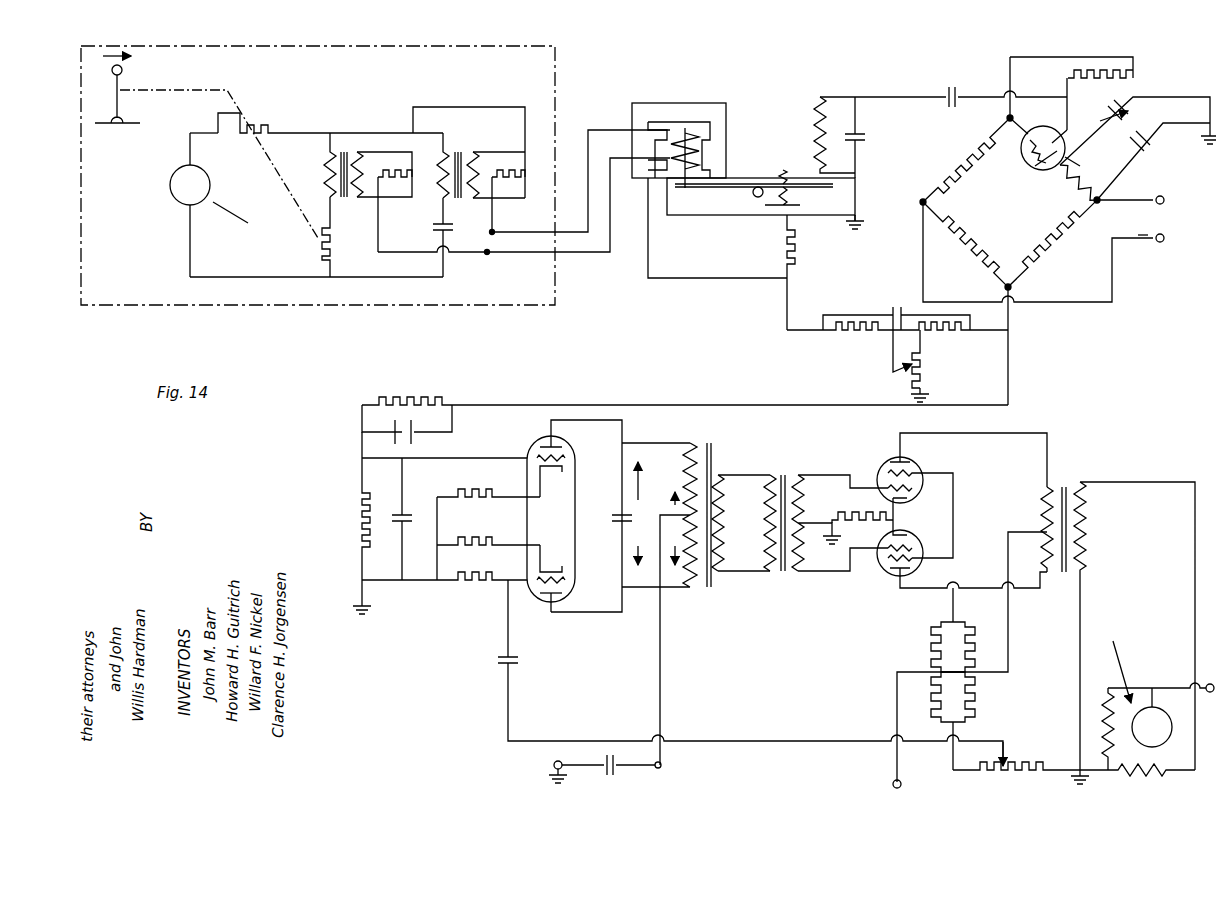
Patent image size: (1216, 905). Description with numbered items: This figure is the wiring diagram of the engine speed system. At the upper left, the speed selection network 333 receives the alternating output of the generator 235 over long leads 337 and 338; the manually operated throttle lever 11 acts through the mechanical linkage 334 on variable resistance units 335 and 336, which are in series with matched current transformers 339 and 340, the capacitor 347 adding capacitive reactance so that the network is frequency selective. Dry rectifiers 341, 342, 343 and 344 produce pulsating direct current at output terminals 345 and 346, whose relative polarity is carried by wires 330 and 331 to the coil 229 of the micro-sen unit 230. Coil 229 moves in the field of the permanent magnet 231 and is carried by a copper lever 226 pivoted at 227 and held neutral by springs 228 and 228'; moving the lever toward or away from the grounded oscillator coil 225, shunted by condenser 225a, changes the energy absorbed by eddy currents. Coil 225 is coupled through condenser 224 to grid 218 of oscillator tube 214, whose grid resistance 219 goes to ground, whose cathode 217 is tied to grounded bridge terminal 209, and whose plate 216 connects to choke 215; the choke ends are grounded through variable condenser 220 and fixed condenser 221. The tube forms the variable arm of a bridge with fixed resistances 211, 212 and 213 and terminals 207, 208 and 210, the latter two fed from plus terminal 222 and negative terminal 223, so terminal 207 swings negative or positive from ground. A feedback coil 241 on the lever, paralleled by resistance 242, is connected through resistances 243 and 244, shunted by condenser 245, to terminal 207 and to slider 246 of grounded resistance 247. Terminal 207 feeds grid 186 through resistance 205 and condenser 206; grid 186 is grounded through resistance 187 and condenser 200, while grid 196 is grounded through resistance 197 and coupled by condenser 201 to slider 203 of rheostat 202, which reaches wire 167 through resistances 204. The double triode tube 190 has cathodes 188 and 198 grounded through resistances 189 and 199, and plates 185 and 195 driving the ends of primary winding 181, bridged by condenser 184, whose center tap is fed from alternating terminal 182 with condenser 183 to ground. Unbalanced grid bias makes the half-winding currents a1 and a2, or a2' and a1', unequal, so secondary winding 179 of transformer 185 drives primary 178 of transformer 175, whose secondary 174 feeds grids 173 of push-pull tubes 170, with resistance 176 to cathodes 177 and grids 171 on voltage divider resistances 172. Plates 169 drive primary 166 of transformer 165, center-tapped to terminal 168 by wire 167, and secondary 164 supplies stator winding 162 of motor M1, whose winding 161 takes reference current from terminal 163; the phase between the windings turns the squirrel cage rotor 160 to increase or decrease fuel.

The throttle lever 11 is at (112, 75).
The speed selection network 333 is at (374, 44).
The mechanical linkage 334 is at (219, 154).
The variable resistance unit 335 is at (244, 128).
The lead 337 is at (190, 156).
The lead 338 is at (190, 272).
The generator 235 is at (170, 186).
The variable resistance unit 336 is at (320, 244).
The current transformer 340 is at (344, 150).
The dry rectifier 341 is at (388, 148).
The dry rectifier 342 is at (389, 198).
The current transformer 339 is at (455, 150).
The dry rectifier 343 is at (510, 140).
The dry rectifier 344 is at (500, 200).
The capacitor 347 is at (438, 228).
The output terminal 346 is at (495, 234).
The output terminal 345 is at (489, 255).
The wire 330 is at (588, 186).
The wire 331 is at (578, 262).
The micro-sen unit 230 is at (782, 76).
The permanent magnet 231 is at (678, 101).
The coil 229 is at (712, 116).
The spring 228 is at (761, 196).
The spring 228' is at (783, 163).
The feedback coil 241 is at (690, 190).
The pivot 227 is at (760, 188).
The oscillator coil 225 is at (800, 108).
The lever 226 is at (815, 134).
The condenser 225a is at (887, 163).
The resistance 242 is at (790, 253).
The condenser 224 is at (957, 93).
The bridge terminal 209 is at (1009, 123).
The fixed resistance 213 is at (968, 151).
The fixed resistance 212 is at (965, 240).
The fixed resistance 211 is at (1053, 245).
The bridge terminal 208 is at (928, 203).
The bridge terminal 207 is at (1012, 287).
The bridge terminal 210 is at (1102, 198).
The grid 218 is at (1063, 128).
The cathode 217 is at (1052, 125).
The oscillator tube 214 is at (1035, 166).
The plate 216 is at (1068, 158).
The resistance 219 is at (1134, 78).
The variable condenser 220 is at (1138, 131).
The fixed condenser 221 is at (1151, 144).
The choke 215 is at (1077, 186).
The plus terminal 222 is at (1165, 200).
The negative terminal 223 is at (1165, 238).
The resistance 243 is at (858, 333).
The resistance 244 is at (943, 333).
The condenser 245 is at (900, 295).
The slider 246 is at (910, 374).
The grounded resistance 247 is at (928, 382).
The resistance 205 is at (425, 393).
The condenser 206 is at (414, 436).
The resistance 187 is at (358, 516).
The condenser 200 is at (419, 520).
The resistance 189 is at (498, 495).
The resistance 199 is at (496, 546).
The resistance 197 is at (496, 580).
The condenser 201 is at (521, 672).
The plate / transformer 185 is at (561, 446).
The grid 186 is at (567, 458).
The cathode 188 is at (562, 472).
The double triode tube 190 is at (565, 559).
The cathode 198 is at (551, 570).
The grid 196 is at (567, 580).
The plate 195 is at (565, 594).
The condenser 184 is at (618, 518).
The primary winding 181 is at (690, 474).
The arrow a2' is at (656, 444).
The arrow a2 is at (660, 500).
The arrow a1' is at (624, 609).
The arrow a1 is at (682, 609).
The terminal 182 is at (662, 766).
The condenser 183 is at (604, 774).
The secondary winding 179 is at (728, 511).
The primary winding 178 is at (767, 556).
The transformer 175 is at (786, 578).
The secondary winding 174 is at (801, 482).
The resistance 176 is at (865, 522).
The push pull amplifier tube 170 is at (883, 465).
The plate 169 is at (908, 463).
The grid 171 is at (925, 479).
The grid 173 is at (915, 488).
The cathode 177 is at (908, 527).
The primary winding 166 is at (1042, 505).
The transformer 165 is at (1063, 579).
The secondary winding 164 is at (1090, 534).
The wire 167 is at (1010, 636).
The voltage divider resistance 172 is at (942, 660).
The voltage divider resistance 204 is at (940, 709).
The terminal 168 is at (893, 783).
The rheostat 202 is at (1004, 778).
The slider 203 is at (1008, 760).
The squirrel cage rotor 160 is at (1166, 742).
The motor M1 is at (1156, 696).
The stator winding 161 is at (1108, 693).
The current source terminal 163 is at (1206, 685).
The stator winding 162 is at (1146, 778).